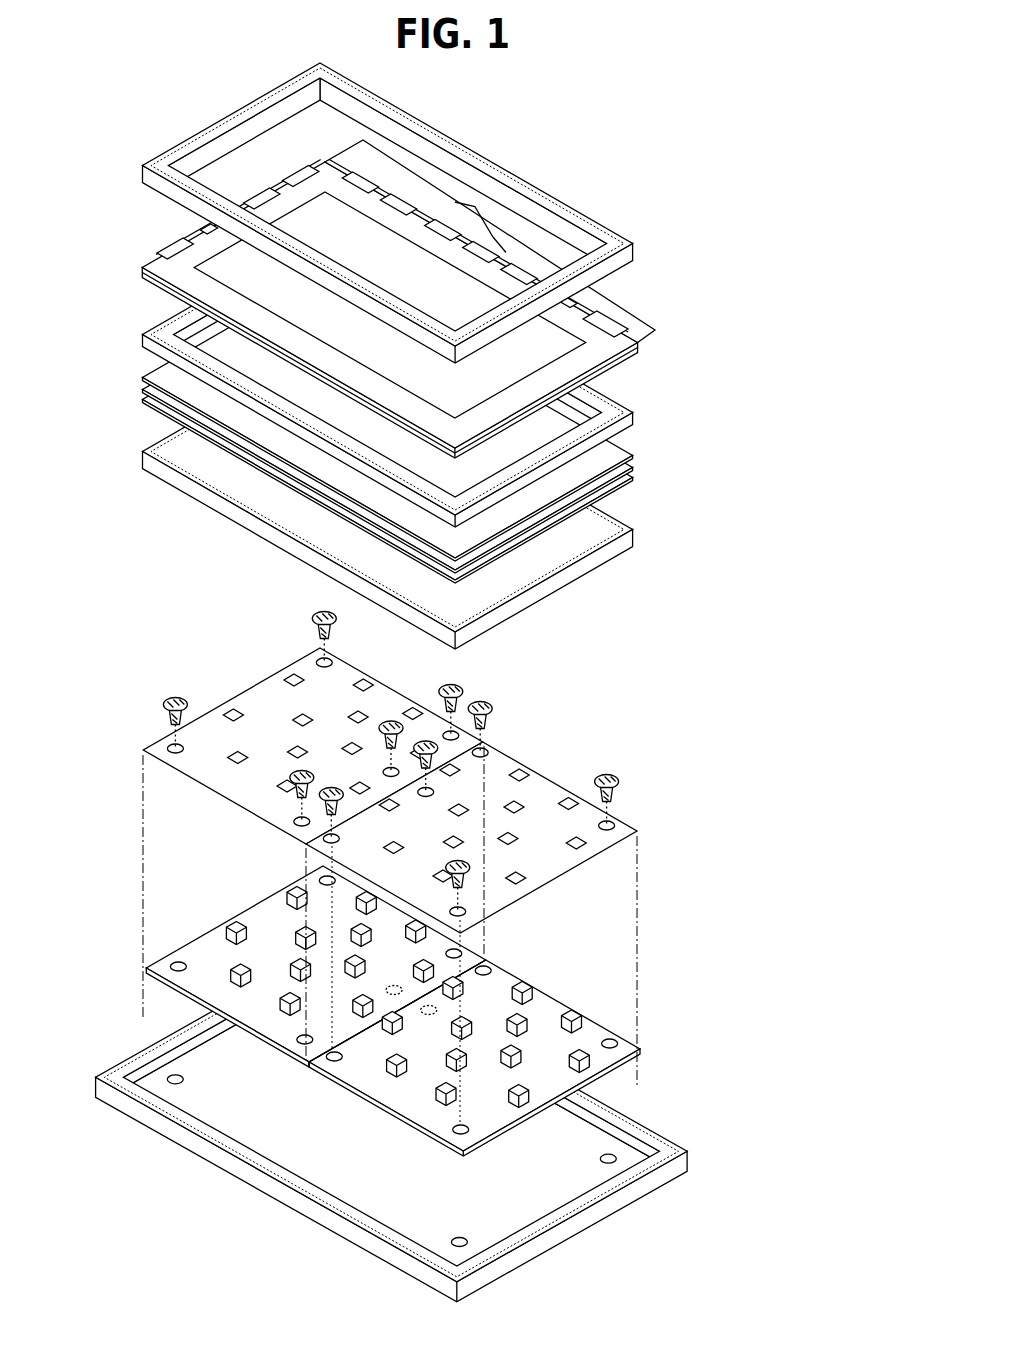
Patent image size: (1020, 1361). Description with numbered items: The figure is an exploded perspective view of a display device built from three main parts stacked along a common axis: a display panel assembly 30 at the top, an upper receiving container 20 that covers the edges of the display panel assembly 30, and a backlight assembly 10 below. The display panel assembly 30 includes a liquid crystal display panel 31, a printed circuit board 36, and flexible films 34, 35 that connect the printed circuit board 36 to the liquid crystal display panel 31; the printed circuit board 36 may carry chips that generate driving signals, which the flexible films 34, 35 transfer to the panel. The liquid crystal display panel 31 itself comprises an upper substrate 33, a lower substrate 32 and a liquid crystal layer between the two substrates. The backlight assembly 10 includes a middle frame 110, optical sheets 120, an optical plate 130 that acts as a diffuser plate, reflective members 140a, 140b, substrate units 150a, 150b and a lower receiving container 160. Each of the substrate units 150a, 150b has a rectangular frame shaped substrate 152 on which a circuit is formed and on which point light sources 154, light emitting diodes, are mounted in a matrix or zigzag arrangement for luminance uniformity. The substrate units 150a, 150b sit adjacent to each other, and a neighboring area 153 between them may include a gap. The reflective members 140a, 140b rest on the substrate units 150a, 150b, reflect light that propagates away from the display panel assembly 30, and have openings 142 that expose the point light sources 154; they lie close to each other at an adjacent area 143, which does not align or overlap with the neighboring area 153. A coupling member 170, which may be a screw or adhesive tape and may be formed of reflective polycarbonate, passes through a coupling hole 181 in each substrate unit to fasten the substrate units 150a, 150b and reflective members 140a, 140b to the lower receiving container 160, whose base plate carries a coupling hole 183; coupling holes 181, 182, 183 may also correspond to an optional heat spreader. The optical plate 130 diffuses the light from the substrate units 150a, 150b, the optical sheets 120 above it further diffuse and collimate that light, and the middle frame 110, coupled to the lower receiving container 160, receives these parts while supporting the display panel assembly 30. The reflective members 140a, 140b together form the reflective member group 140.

The backlight assembly 10 is at (700, 846).
The upper receiving container 20 is at (637, 252).
The display panel assembly 30 is at (722, 304).
The liquid crystal display panel 31 is at (690, 355).
The lower substrate 32 is at (614, 346).
The upper substrate 33 is at (578, 360).
The flexible film 34 is at (610, 320).
The flexible film 35 is at (170, 246).
The printed circuit board 36 is at (648, 328).
The middle frame 110 is at (636, 417).
The optical sheets 120 is at (643, 448).
The optical plate 130 is at (636, 535).
The reflecting plate 140 is at (590, 752).
The first reflective member 140a is at (265, 702).
The second reflective member 140b is at (550, 856).
The openings 142 is at (370, 678).
The adjacent area 143 is at (478, 733).
The first substrate unit 150a is at (165, 985).
The second substrate unit 150b is at (373, 1104).
The substrate 152 is at (280, 907).
The neighboring area 153 is at (298, 1063).
The point light sources 154 is at (231, 913).
The lower receiving container 160 is at (534, 1234).
The coupling member 170 is at (312, 612).
The coupling hole 181 is at (609, 823).
The coupling hole 182 is at (631, 1056).
The coupling hole 183 is at (615, 1163).